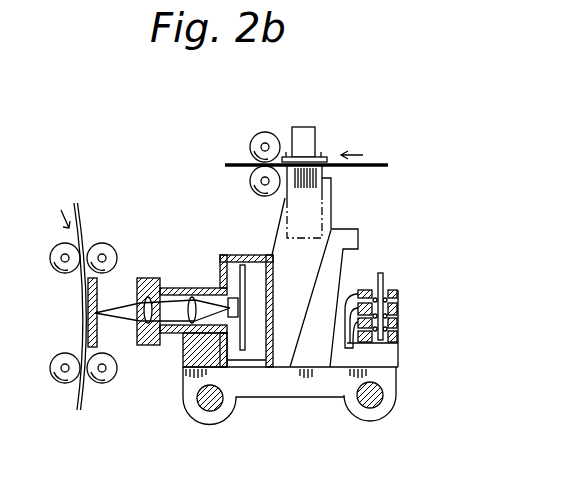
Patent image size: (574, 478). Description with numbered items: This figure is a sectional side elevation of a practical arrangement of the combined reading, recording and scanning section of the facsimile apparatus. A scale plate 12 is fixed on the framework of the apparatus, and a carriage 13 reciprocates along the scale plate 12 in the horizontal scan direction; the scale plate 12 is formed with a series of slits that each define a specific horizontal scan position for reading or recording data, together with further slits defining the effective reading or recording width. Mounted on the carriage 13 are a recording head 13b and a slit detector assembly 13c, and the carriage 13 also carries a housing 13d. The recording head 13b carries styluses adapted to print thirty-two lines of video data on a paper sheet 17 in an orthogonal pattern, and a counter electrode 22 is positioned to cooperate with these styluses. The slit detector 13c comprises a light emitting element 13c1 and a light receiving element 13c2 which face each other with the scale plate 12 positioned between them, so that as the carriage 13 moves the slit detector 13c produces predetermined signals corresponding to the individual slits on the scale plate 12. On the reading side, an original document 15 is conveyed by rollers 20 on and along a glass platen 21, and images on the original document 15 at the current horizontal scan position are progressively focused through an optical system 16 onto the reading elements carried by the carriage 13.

The scale plate 12 is at (384, 277).
The carriage 13 is at (293, 397).
The recording head 13b is at (330, 177).
The slit detector assembly 13c is at (396, 358).
The light emitting element 13c1 is at (399, 303).
The light receiving element 13c2 is at (365, 343).
The detector housing 13d is at (243, 306).
The original document 15 is at (82, 217).
The optical system 16 is at (170, 340).
The paper sheet 17 is at (390, 163).
The rollers 20 is at (118, 246).
The glass platen 21 is at (97, 300).
The counter electrode 22 is at (316, 130).